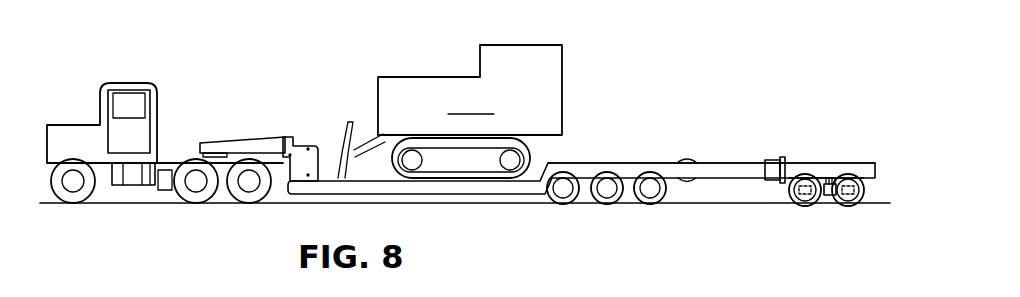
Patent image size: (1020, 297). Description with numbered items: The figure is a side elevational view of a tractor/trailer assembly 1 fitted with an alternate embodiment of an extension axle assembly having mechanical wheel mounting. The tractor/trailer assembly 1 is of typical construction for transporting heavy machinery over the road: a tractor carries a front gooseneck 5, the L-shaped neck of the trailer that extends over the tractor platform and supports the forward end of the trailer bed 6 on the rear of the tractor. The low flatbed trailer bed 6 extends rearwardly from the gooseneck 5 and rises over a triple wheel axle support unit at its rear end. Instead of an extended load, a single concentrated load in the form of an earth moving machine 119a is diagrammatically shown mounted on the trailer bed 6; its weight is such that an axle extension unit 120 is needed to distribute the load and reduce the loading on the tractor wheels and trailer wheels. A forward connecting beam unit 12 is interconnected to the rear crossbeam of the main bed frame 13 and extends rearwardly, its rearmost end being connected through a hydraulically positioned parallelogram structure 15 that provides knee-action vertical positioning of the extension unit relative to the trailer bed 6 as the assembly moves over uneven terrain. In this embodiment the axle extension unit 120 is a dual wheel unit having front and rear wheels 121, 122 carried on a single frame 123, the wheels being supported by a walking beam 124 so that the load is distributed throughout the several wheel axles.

The tractor/trailer assembly 1 is at (250, 124).
The gooseneck 5 is at (267, 142).
The trailer bed 6 is at (437, 187).
The connecting beam unit 12 is at (727, 175).
The main bed frame 13 is at (630, 166).
The parallelogram structure 15 is at (773, 155).
The earth moving machine 119a is at (450, 111).
The axle extension unit 120 is at (814, 179).
The front wheel 121 is at (805, 208).
The rear wheel 122 is at (852, 208).
The frame 123 is at (817, 170).
The walking beam 124 is at (828, 196).